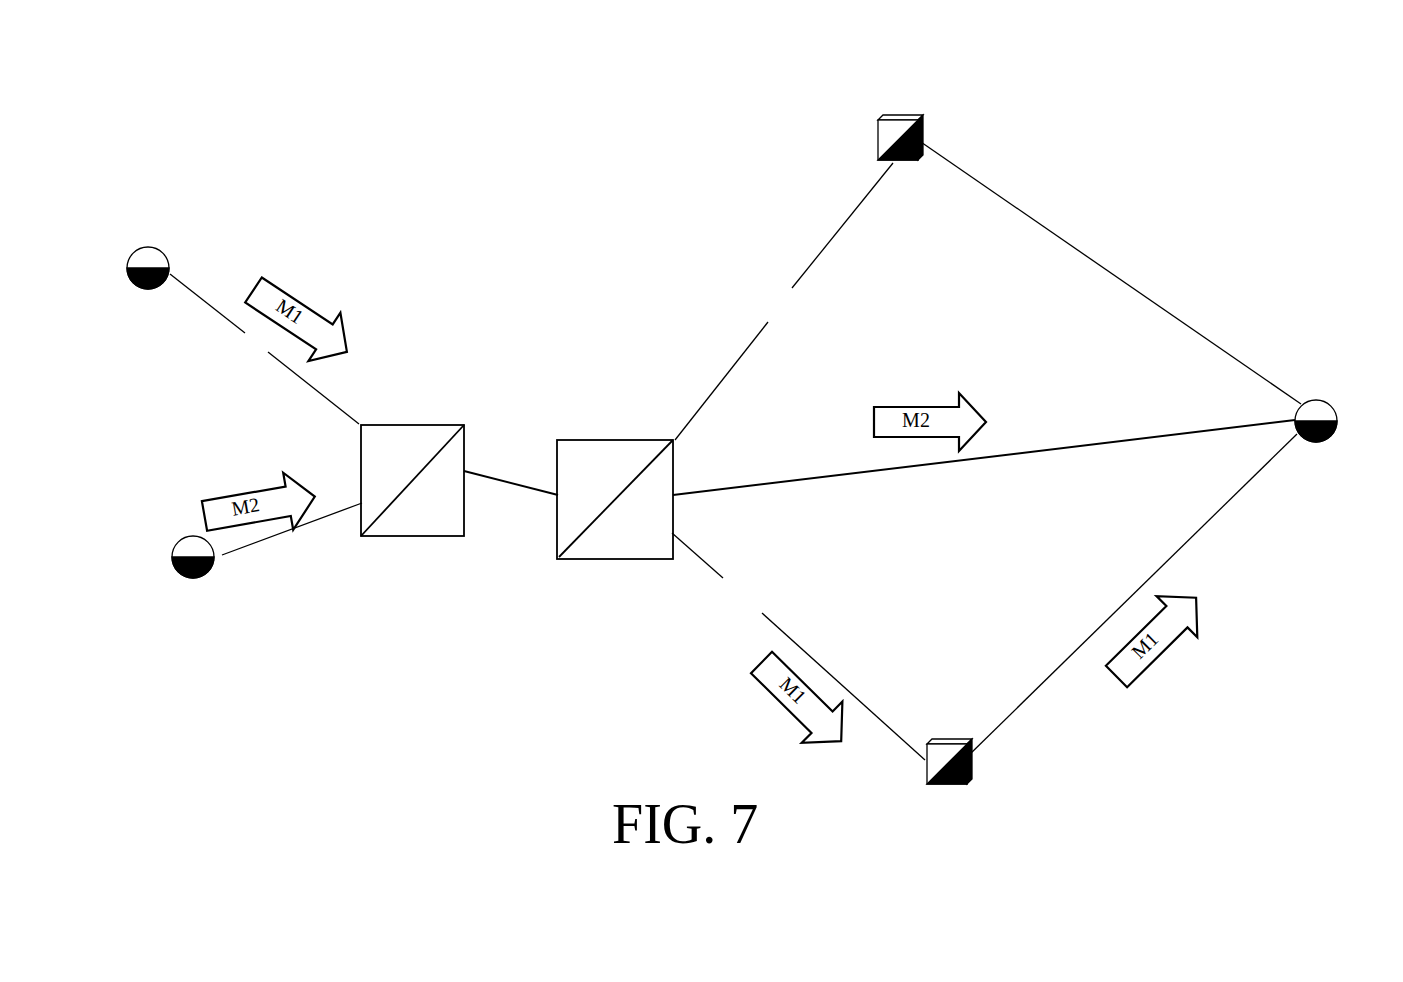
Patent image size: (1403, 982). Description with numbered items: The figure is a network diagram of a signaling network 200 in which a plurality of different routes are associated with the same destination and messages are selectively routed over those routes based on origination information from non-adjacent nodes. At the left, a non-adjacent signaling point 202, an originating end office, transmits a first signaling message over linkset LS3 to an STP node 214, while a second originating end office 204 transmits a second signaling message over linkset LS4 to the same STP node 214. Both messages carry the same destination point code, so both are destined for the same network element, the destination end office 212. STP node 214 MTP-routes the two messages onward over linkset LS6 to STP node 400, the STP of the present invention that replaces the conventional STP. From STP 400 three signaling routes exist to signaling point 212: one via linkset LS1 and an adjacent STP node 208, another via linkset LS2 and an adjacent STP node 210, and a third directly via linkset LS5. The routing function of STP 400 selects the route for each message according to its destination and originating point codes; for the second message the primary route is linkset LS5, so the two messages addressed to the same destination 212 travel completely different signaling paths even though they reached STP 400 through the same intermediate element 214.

The signaling network 200 is at (496, 180).
The originating end office node 202 is at (146, 260).
The originating end office node 204 is at (185, 545).
The STP node 208 is at (938, 748).
The STP node 210 is at (890, 135).
The destination end office 212 is at (1320, 412).
The STP node 214 is at (420, 440).
The STP node 400 is at (607, 455).
The signaling linkset LS1 is at (798, 646).
The signaling linkset LS2 is at (784, 301).
The signaling linkset LS3 is at (264, 349).
The signaling linkset LS4 is at (292, 543).
The signaling linkset LS5 is at (984, 462).
The signaling linkset LS6 is at (511, 502).